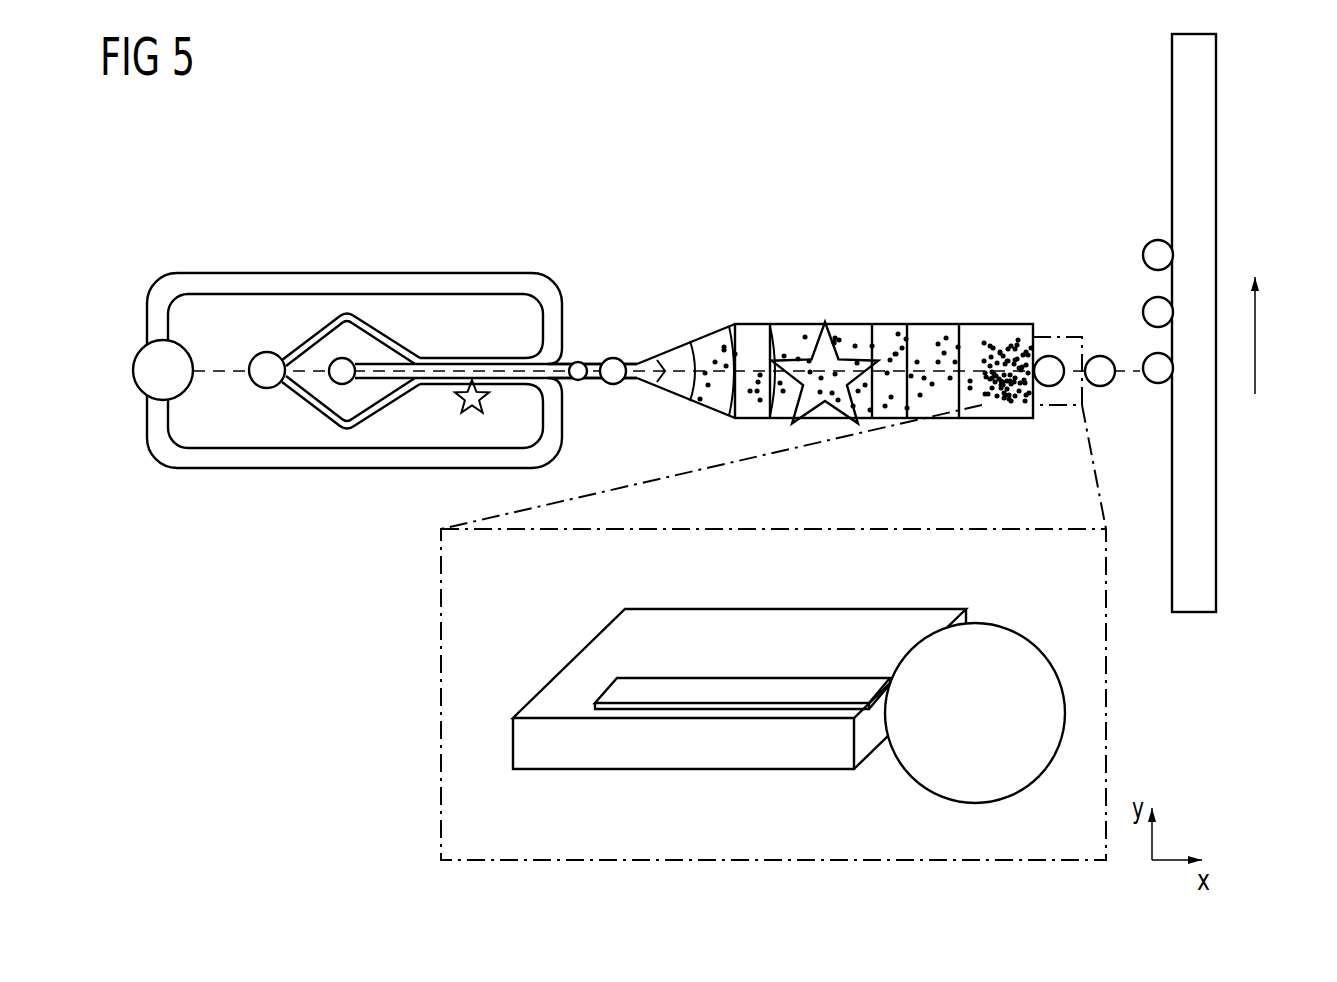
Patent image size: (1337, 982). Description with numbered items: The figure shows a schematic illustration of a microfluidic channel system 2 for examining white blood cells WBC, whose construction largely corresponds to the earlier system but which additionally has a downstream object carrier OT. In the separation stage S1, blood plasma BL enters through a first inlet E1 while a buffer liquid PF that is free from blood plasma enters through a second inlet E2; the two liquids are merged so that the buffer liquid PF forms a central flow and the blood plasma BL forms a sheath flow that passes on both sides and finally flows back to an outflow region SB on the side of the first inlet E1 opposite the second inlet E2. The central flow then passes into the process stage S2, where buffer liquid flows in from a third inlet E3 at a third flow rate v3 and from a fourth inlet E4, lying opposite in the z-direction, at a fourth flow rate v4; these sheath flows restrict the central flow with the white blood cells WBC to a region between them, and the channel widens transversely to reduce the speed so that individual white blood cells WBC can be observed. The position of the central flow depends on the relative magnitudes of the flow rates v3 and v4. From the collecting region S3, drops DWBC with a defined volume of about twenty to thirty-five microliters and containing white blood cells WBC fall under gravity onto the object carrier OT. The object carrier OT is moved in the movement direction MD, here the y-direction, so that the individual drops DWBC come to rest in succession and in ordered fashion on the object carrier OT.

The microfluidic channel system 2 is at (626, 124).
The separation stage S1 is at (318, 251).
The process stage S2 is at (836, 300).
The collecting region S3 is at (992, 292).
The outflow region SB is at (150, 350).
The blood plasma BL is at (262, 385).
The buffer liquid PF is at (342, 384).
The first inlet E1 is at (248, 327).
The second inlet E2 is at (341, 375).
The third inlet E3 is at (586, 374).
The fourth inlet E4 is at (622, 375).
The third flow rate v3 is at (585, 336).
The fourth flow rate v4 is at (621, 339).
The white blood cells WBC is at (765, 335).
The drops DWBC is at (1009, 644).
The object carrier OT is at (1212, 520).
The movement direction MD is at (1258, 340).